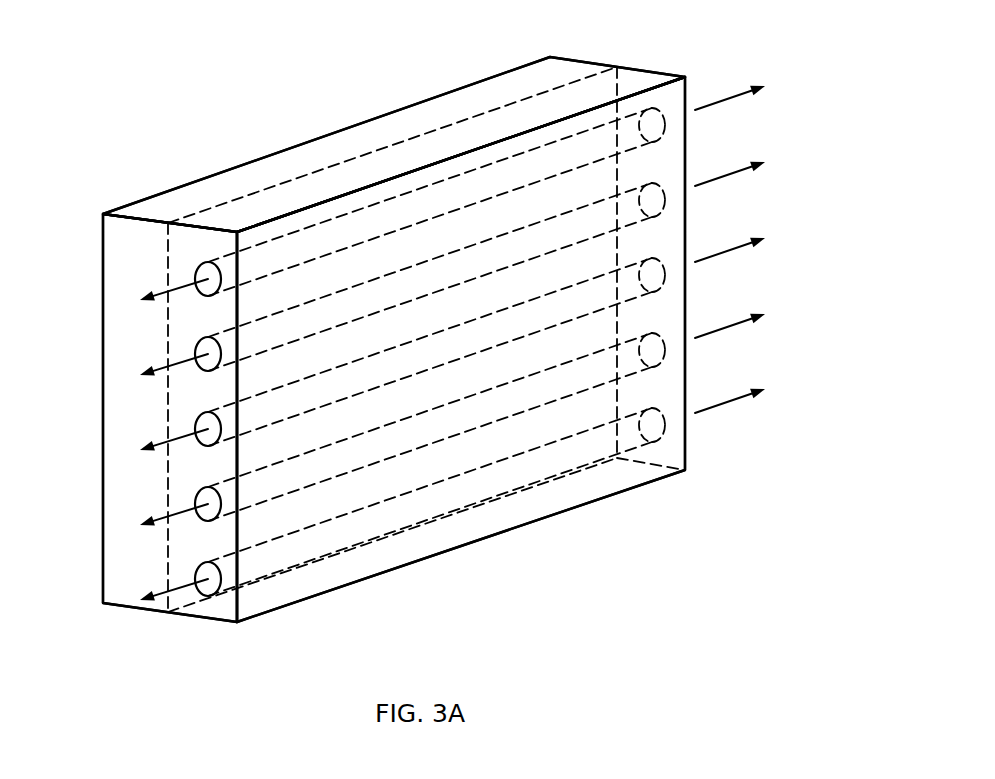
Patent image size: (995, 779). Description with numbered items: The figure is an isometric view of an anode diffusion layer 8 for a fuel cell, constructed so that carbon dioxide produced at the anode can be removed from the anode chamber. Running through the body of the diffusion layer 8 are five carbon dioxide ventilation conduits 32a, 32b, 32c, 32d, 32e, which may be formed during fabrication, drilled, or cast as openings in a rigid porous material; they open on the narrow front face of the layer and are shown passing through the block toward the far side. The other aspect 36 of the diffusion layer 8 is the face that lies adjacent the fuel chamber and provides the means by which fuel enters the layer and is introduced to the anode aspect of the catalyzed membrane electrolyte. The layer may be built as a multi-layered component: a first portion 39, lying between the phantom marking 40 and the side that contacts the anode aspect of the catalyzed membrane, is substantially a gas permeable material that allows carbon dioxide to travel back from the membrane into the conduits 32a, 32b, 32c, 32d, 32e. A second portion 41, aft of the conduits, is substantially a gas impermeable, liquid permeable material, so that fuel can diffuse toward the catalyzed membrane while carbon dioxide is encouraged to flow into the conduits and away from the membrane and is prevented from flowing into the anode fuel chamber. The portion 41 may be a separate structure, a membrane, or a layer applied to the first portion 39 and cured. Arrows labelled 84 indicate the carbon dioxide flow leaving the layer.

The diffusion layer 8 is at (559, 535).
The conduit portion 32a is at (195, 272).
The conduit portion 32b is at (195, 347).
The conduit portion 32c is at (195, 422).
The conduit portion 32d is at (195, 497).
The conduit portion 32e is at (195, 572).
The other aspect of the diffusion layer 36 is at (103, 223).
The first portion 39 is at (643, 88).
The phantom marking 40 is at (437, 137).
The second portion 41 is at (298, 151).
The outlet face of module 84 is at (678, 237).